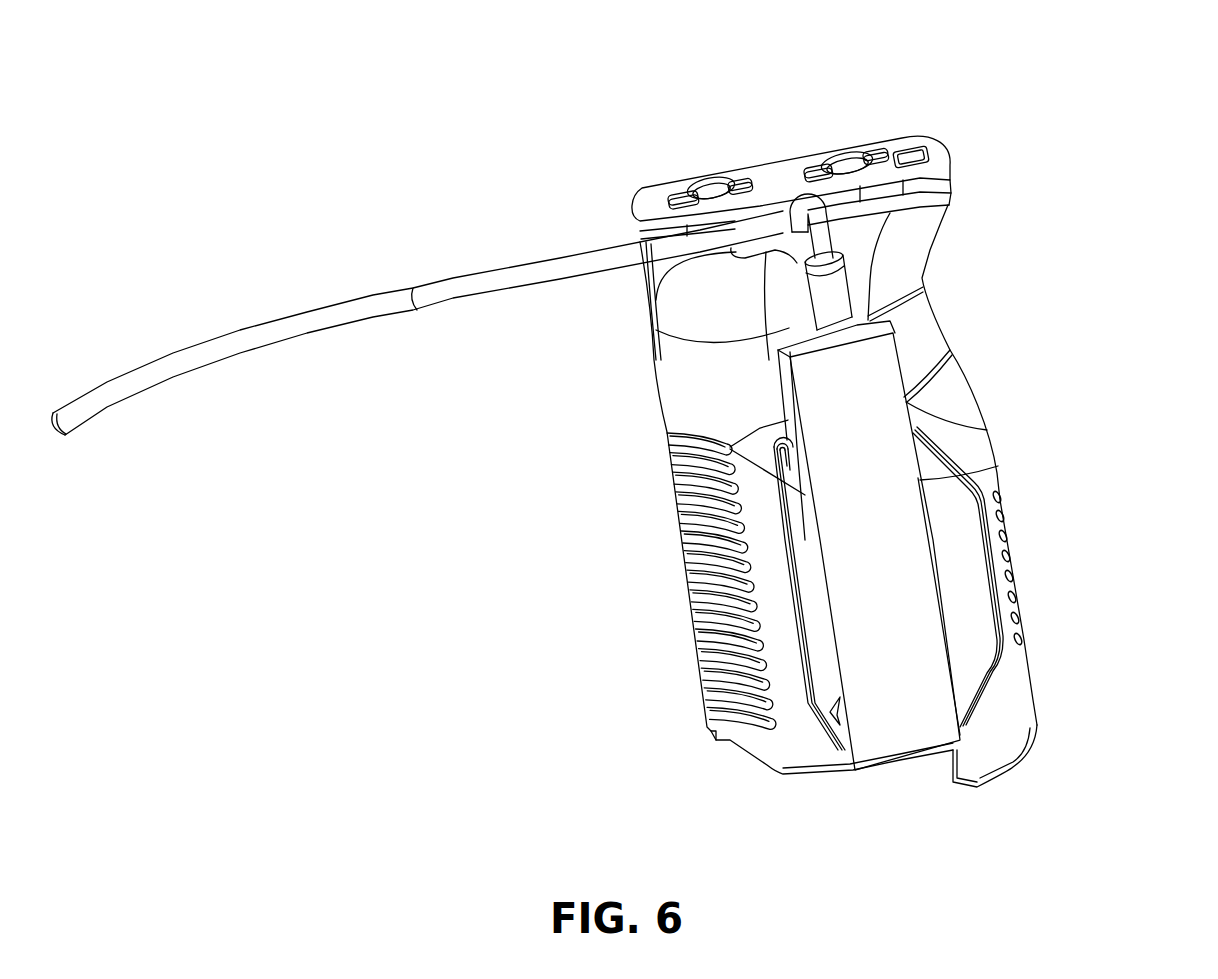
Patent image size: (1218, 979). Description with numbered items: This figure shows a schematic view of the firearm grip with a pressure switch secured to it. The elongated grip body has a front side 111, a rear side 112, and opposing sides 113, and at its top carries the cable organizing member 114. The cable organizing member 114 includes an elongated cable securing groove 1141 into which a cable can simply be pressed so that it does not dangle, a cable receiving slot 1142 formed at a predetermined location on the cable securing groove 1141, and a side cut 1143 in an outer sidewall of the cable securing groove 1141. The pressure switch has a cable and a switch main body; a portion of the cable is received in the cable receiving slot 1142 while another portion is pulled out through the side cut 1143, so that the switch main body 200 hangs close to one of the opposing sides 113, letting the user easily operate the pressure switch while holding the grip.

The cable organizing member 114 is at (725, 140).
The cable securing groove 1141 is at (918, 188).
The cable receiving slot 1142 is at (835, 192).
The side cut 1143 is at (792, 232).
The front side 111 is at (670, 400).
The rear side 112 is at (957, 388).
The opposing sides 113 is at (950, 578).
The battery pack 200 is at (855, 505).